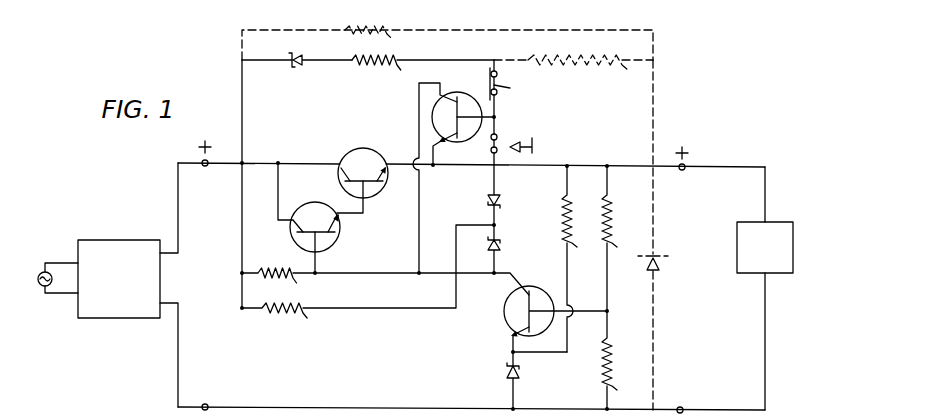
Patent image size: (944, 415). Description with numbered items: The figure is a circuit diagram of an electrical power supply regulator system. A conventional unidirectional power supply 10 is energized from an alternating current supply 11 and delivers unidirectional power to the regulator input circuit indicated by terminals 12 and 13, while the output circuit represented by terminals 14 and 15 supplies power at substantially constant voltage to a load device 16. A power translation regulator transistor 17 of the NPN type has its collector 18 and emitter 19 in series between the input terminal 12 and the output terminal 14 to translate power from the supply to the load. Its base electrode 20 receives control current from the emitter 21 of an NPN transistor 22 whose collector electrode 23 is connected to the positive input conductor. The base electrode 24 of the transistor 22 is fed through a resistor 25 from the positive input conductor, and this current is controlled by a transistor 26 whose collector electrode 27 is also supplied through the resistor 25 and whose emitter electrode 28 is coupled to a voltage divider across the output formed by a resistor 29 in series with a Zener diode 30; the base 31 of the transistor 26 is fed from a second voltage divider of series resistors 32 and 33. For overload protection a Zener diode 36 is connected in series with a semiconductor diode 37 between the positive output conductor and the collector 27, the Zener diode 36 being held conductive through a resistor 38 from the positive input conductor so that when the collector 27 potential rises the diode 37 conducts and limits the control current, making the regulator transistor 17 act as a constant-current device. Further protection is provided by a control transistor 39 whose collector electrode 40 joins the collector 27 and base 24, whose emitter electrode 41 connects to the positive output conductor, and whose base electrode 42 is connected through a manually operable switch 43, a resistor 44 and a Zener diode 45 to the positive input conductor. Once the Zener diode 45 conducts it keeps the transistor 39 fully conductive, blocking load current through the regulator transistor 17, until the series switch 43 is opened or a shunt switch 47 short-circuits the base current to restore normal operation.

The unidirectional power supply 10 is at (112, 320).
The alternating current supply 11 is at (39, 274).
The input terminal 12 is at (206, 167).
The input terminal 13 is at (208, 404).
The output terminal 14 is at (685, 171).
The output terminal 15 is at (681, 406).
The load device 16 is at (794, 240).
The power translation regulator transistor 17 is at (361, 169).
The collector 18 is at (342, 175).
The emitter 19 is at (386, 177).
The base electrode 20 is at (372, 190).
The emitter 21 is at (342, 229).
The transistor 22 is at (318, 219).
The collector electrode 23 is at (292, 227).
The base electrode 24 is at (320, 242).
The resistor 25 is at (285, 278).
The transistor 26 is at (504, 315).
The collector electrode 27 is at (542, 306).
The emitter electrode 28 is at (512, 331).
The resistor 29 is at (547, 220).
The Zener diode 30 is at (520, 378).
The base 31 is at (534, 297).
The resistor 32 is at (612, 217).
The resistor 33 is at (603, 370).
The Zener diode 36 is at (502, 201).
The semiconductor diode 37 is at (500, 247).
The resistor 38 is at (289, 314).
The control transistor 39 is at (456, 140).
The collector electrode 40 is at (431, 106).
The emitter electrode 41 is at (439, 137).
The base electrode 42 is at (438, 174).
The manually operable switch 43 is at (511, 89).
The resistor 44 is at (377, 64).
The Zener diode 45 is at (296, 64).
The shunt switch 47 is at (522, 142).